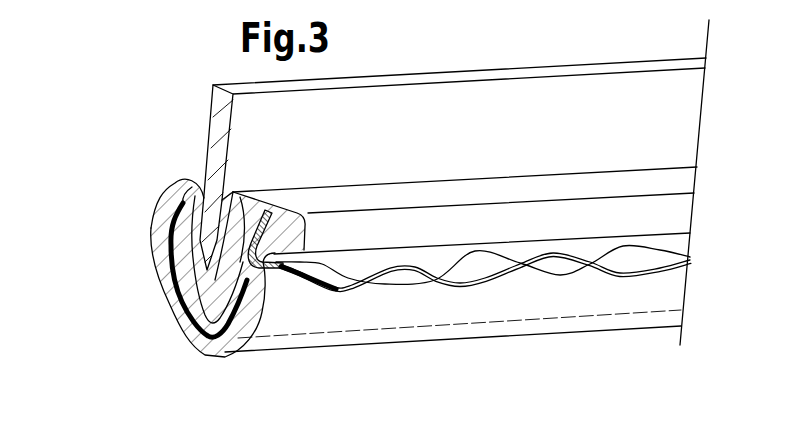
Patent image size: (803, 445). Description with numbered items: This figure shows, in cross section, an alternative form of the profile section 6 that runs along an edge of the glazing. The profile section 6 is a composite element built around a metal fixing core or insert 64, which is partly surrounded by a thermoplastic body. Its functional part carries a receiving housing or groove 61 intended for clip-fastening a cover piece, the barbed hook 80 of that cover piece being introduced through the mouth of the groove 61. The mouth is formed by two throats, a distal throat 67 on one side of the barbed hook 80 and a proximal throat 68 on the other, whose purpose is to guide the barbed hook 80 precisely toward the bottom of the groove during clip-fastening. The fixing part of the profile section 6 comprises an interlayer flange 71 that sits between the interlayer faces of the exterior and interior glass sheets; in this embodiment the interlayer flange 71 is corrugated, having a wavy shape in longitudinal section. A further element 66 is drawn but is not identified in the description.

The profile section 6 is at (116, 212).
The receiving housing or groove 61 is at (170, 272).
The fixing core or insert 64 is at (280, 265).
The seal bottom portion 66 is at (178, 322).
The distal throat 67 is at (173, 189).
The proximal throat 68 is at (233, 192).
The interlayer flange 71 is at (447, 278).
The barbed hook 80 is at (214, 118).